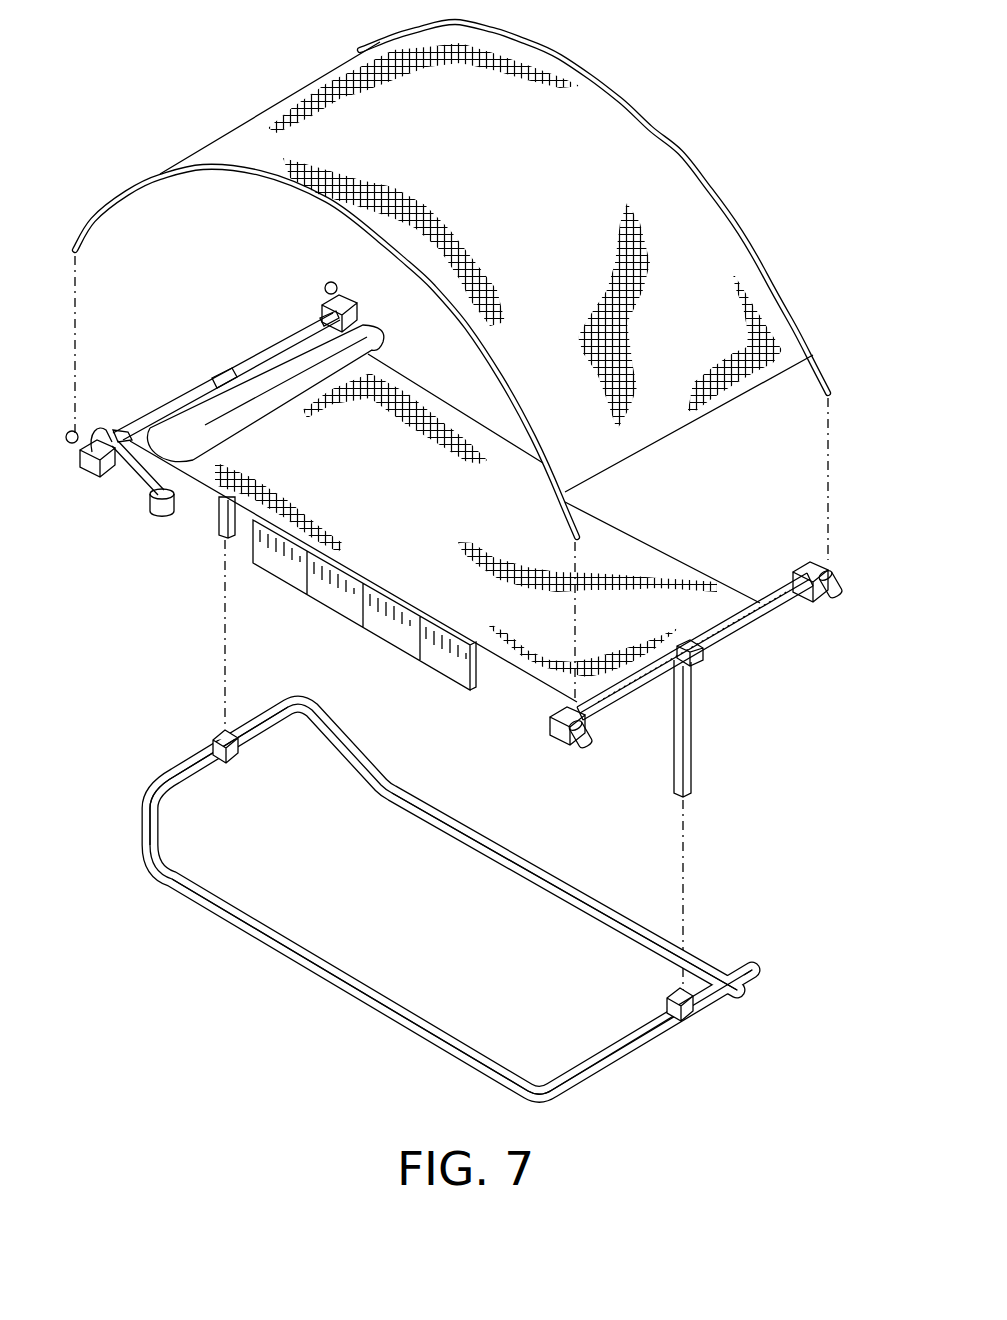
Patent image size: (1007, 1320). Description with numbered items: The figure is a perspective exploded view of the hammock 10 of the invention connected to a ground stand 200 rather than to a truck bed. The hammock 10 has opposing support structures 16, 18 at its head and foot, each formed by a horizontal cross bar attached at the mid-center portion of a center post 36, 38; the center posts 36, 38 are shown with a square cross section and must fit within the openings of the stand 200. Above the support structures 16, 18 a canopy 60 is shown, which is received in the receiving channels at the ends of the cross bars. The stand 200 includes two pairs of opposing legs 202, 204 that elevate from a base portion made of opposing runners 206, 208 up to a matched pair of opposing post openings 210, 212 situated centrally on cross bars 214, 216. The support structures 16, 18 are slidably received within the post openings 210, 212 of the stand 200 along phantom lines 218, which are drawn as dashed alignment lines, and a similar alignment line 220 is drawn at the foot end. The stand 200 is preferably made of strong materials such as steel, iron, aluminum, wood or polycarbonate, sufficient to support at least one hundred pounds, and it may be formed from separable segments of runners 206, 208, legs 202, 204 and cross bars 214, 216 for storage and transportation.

The canopy 60 is at (538, 207).
The hammock 10 is at (446, 506).
The support structure 16 is at (173, 398).
The support structure 18 is at (690, 717).
The center post 36 is at (217, 520).
The center post 38 is at (683, 747).
The stand 200 is at (453, 904).
The legs 202 is at (333, 738).
The legs 204 is at (759, 987).
The runner 206 is at (323, 983).
The runner 208 is at (562, 877).
The post opening 210 is at (225, 730).
The post opening 212 is at (678, 991).
The cross bar 214 is at (168, 768).
The cross bar 216 is at (650, 1037).
The phantom lines 218 is at (222, 632).
The right alignment axis 220 is at (686, 848).